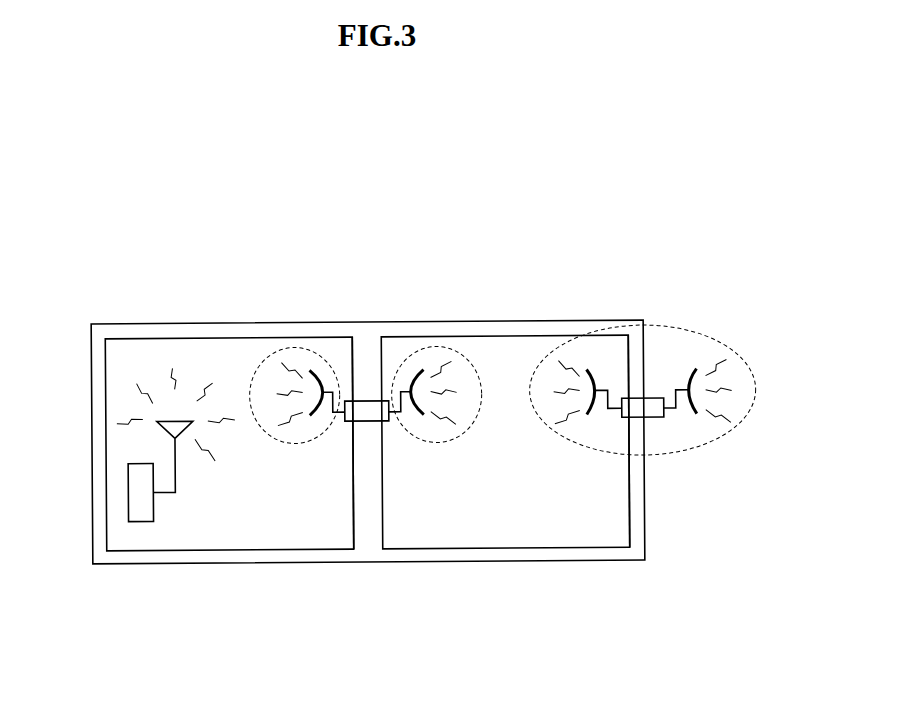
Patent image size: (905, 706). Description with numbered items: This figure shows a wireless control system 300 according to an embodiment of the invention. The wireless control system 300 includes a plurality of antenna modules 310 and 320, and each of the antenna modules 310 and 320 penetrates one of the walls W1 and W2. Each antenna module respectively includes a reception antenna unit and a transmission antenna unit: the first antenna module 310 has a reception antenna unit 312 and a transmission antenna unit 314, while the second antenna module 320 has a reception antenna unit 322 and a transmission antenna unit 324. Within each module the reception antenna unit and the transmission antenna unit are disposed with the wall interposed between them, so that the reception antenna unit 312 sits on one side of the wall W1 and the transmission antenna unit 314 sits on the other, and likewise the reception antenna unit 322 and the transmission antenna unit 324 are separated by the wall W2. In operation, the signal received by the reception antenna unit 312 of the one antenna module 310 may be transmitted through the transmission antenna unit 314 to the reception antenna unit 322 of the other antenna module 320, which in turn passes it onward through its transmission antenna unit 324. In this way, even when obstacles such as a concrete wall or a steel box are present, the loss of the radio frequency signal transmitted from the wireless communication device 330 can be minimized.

The wireless control system 300 is at (411, 214).
The antenna module 310 is at (287, 322).
The reception antenna unit 312 is at (325, 413).
The transmission antenna unit 314 is at (411, 413).
The antenna module 320 is at (563, 322).
The reception antenna unit 322 is at (590, 412).
The transmission antenna unit 324 is at (687, 412).
The wireless communication device 330 is at (140, 522).
The wall W1 is at (354, 526).
The wall W2 is at (630, 525).